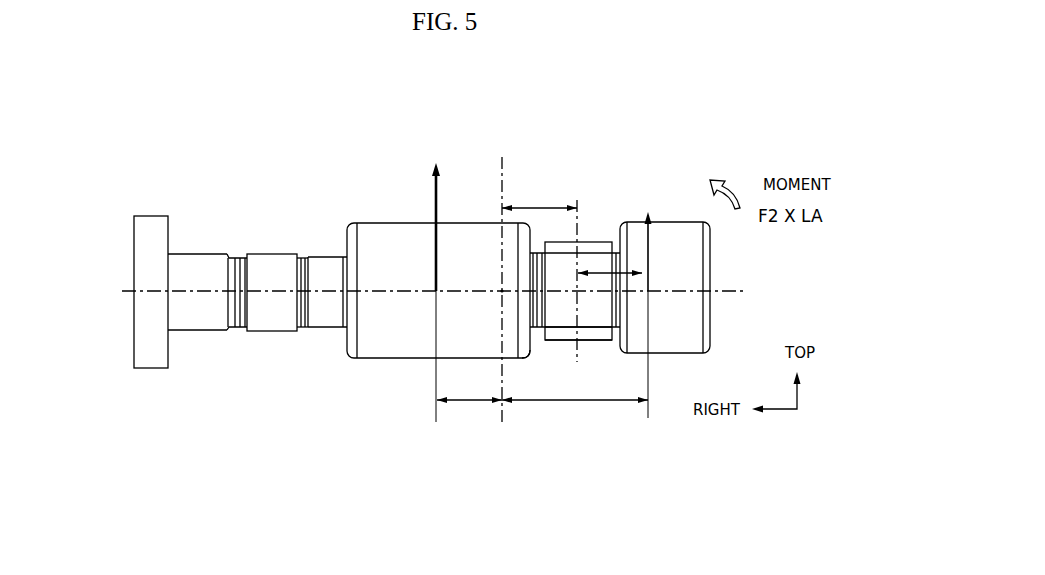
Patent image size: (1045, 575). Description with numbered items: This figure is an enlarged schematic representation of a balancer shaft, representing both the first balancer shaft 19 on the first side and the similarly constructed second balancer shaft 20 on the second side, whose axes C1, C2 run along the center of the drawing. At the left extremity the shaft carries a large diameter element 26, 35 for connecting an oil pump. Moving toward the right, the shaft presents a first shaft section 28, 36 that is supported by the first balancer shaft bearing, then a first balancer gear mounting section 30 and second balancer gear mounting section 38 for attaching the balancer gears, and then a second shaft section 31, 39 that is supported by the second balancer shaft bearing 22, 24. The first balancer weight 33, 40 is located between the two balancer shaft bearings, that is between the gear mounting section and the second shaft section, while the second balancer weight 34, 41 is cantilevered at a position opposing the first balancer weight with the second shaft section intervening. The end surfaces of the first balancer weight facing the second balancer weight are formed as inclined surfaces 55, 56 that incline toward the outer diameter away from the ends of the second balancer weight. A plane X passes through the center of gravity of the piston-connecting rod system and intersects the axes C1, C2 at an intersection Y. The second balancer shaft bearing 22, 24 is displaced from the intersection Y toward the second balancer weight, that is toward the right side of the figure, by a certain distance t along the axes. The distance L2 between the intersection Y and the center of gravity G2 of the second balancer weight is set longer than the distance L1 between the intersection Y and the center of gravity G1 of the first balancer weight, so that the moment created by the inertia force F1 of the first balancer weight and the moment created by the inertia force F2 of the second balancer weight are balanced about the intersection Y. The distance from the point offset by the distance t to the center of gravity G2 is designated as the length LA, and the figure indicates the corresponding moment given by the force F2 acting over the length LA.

The first balancer shaft 19 is at (428, 267).
The second balancer shaft 20 is at (752, 82).
The second balancer shaft bearing 22 is at (575, 216).
The second balancer shaft bearing 24 is at (597, 247).
The large diameter element 26 is at (140, 245).
The first shaft section 28 is at (207, 215).
The first balancer gear mounting section 30 is at (297, 221).
The second shaft section 31 is at (612, 398).
The first balancer weight 33 is at (438, 226).
The second balancer weight 34 is at (709, 287).
The large diameter element 35 is at (157, 220).
The first shaft section 36 is at (208, 260).
The second balancer gear mounting section 38 is at (267, 257).
The second shaft section 39 is at (597, 318).
The first balancer weight 40 is at (388, 230).
The second balancer weight 41 is at (697, 240).
The inclined surface 55 is at (554, 370).
The inclined surface 56 is at (535, 360).
The axis C1 is at (400, 322).
The axis C2 is at (148, 294).
The inertia force F1 is at (438, 277).
The inertia force F2 is at (649, 300).
The center of gravity G1 is at (426, 304).
The center of gravity G2 is at (654, 303).
The distance L1 is at (469, 419).
The distance L2 is at (575, 419).
The length LA is at (602, 272).
The plane X is at (502, 157).
The intersection Y is at (497, 279).
The distance t is at (539, 269).